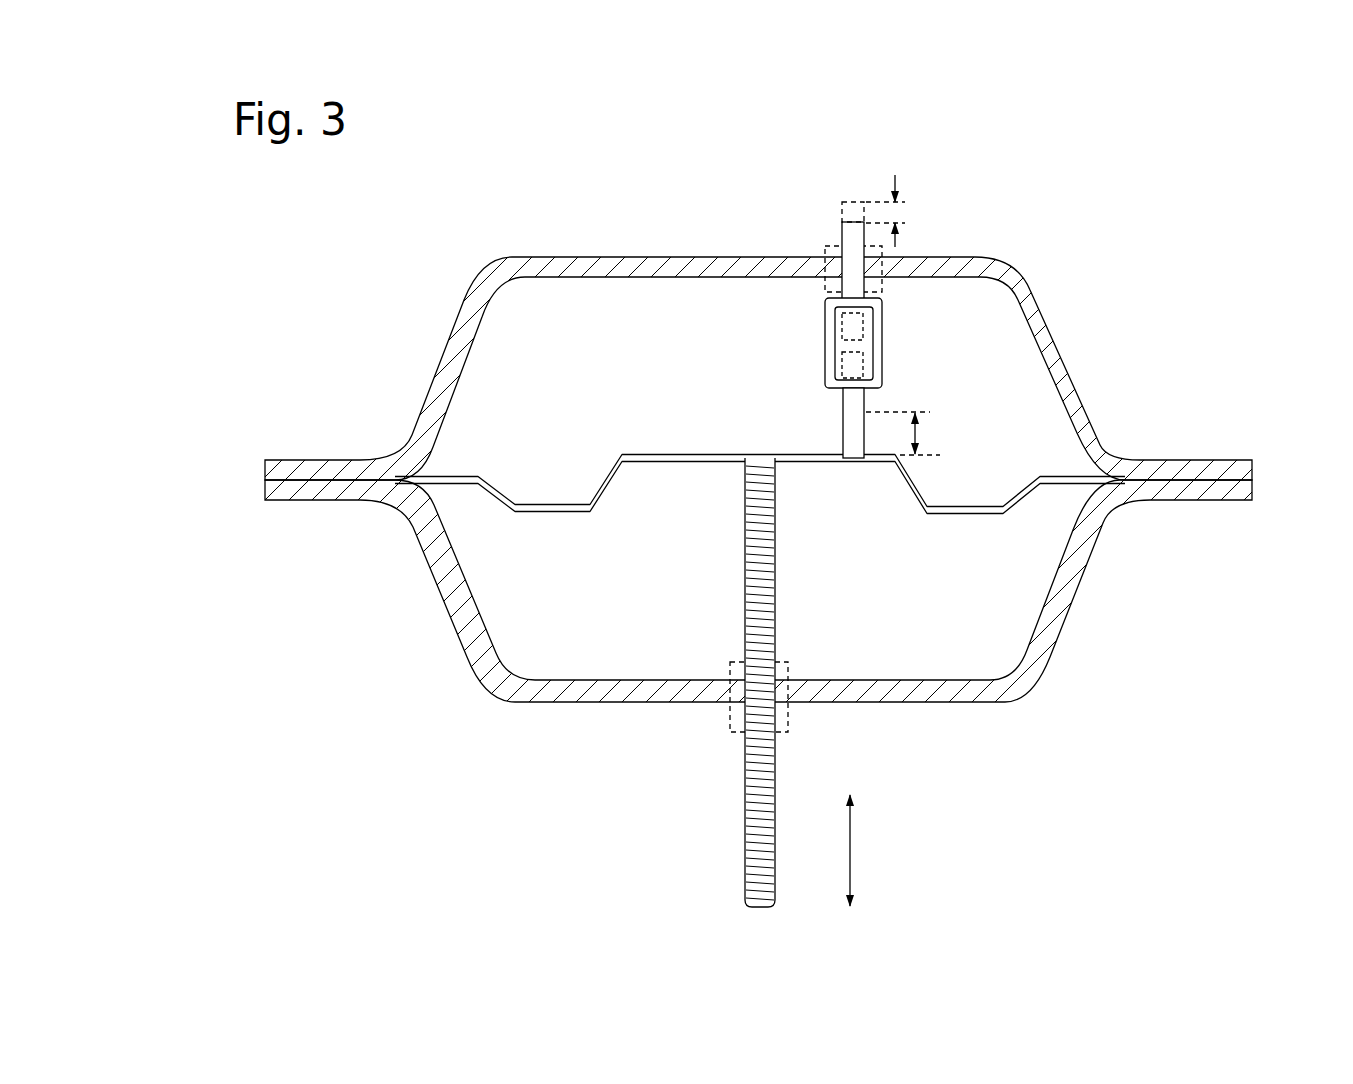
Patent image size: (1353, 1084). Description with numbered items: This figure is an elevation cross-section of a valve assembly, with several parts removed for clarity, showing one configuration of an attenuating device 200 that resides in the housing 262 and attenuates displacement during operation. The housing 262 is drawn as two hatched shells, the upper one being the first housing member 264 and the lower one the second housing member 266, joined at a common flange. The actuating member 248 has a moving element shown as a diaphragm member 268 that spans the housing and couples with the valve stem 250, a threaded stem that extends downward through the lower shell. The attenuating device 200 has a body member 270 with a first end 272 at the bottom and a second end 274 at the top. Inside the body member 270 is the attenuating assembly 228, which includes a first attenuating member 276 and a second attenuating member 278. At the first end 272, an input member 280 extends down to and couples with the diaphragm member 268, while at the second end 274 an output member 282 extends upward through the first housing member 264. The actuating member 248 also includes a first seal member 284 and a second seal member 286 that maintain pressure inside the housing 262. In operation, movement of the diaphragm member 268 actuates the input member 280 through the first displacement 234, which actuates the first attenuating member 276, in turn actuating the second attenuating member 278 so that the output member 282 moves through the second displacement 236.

The attenuating device 200 is at (683, 315).
The attenuating assembly 228 is at (835, 348).
The first displacement 234 is at (916, 432).
The second displacement 236 is at (895, 212).
The actuating member 248 is at (1137, 180).
The valve stem 250 is at (775, 613).
The housing 262 is at (232, 262).
The first housing member 264 is at (1067, 353).
The lower housing shell 266 is at (1080, 585).
The diaphragm member 268 is at (1077, 470).
The body member 270 is at (825, 323).
The first end 272 is at (820, 403).
The second end 274 is at (882, 303).
The first attenuating member 276 is at (863, 370).
The second attenuating member 278 is at (863, 323).
The input member 280 is at (853, 403).
The output member 282 is at (850, 267).
The first seal member 284 is at (780, 662).
The second seal member 286 is at (827, 247).